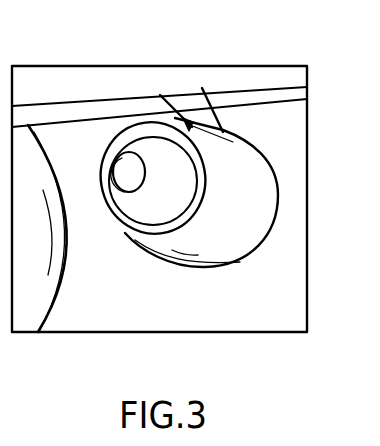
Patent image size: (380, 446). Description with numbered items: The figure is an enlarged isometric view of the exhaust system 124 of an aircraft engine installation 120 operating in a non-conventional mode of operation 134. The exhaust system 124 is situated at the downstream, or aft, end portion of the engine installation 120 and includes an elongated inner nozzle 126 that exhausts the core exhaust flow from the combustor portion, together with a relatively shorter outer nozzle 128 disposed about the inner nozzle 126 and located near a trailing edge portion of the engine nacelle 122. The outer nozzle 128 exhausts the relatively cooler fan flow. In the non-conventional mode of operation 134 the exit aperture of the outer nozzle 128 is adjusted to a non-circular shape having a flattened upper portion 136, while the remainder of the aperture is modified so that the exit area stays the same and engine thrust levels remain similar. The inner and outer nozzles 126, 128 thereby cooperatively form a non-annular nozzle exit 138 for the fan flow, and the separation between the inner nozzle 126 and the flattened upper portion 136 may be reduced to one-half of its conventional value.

The engine installation 120 is at (203, 176).
The engine nacelle 122 is at (258, 198).
The exhaust system 124 is at (108, 290).
The inner nozzle 126 is at (147, 198).
The outer nozzle 128 is at (102, 148).
The non-conventional mode of operation 134 is at (283, 117).
The flattened upper portion 136 is at (147, 130).
The non-annular nozzle exit 138 is at (188, 125).